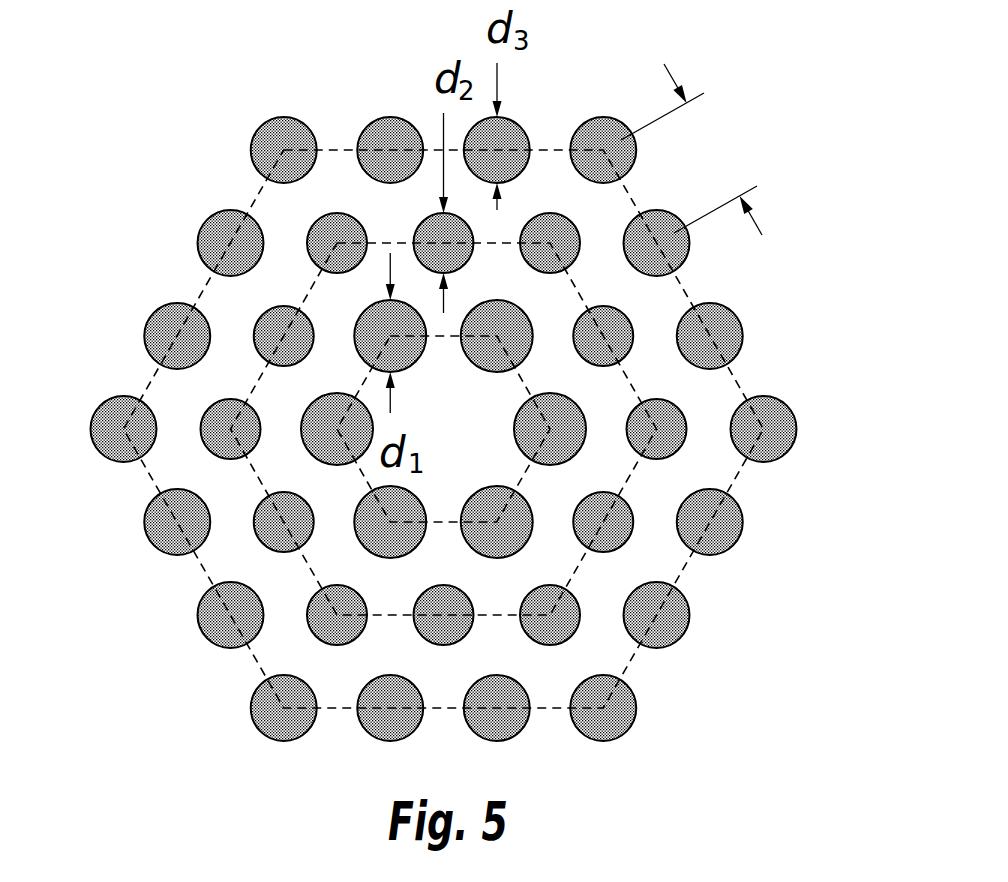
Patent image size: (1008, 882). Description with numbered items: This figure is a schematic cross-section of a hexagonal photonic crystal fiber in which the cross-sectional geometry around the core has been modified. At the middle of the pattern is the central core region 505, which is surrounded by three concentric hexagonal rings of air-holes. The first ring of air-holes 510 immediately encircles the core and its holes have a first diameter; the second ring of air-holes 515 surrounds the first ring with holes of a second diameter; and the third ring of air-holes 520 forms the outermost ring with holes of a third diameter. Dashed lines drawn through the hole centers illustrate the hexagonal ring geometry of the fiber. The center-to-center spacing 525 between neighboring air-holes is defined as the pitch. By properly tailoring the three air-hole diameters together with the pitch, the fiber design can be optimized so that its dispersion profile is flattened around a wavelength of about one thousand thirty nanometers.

The central core region 505 is at (487, 410).
The first ring of air-holes 510 is at (344, 376).
The second ring of air-holes 515 is at (296, 272).
The third ring of air-holes 520 is at (132, 380).
The center-to-center spacing 525 is at (691, 149).